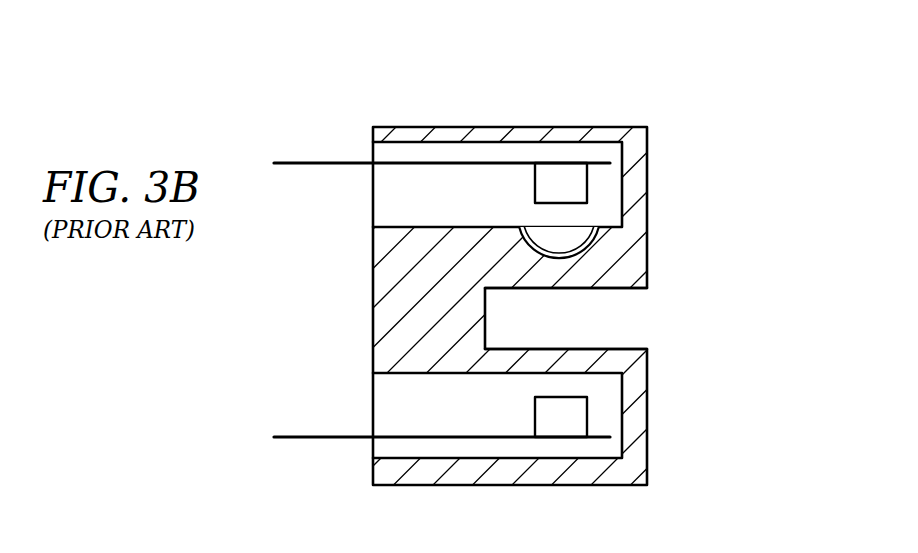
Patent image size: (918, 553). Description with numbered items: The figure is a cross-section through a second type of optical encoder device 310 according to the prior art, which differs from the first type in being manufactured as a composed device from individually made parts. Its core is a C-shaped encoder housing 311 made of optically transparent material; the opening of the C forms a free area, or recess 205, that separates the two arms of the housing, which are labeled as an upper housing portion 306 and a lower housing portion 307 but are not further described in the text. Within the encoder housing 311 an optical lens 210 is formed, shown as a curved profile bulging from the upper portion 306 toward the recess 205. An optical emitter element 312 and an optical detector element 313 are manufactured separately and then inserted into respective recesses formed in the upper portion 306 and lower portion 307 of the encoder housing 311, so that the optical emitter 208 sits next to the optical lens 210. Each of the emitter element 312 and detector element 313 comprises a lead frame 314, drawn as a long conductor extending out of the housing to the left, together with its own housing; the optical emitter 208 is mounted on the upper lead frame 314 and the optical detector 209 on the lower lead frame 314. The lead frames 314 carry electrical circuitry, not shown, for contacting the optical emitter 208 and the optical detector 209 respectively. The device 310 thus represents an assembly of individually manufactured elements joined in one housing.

The second type of optical encoder device 310 is at (657, 80).
The upper core half 306 is at (660, 176).
The lower core half 307 is at (660, 425).
The encoder housing 311 is at (413, 307).
The free area (recess) 205 is at (643, 329).
The optical emitter element 312 is at (400, 227).
The optical detector element 313 is at (400, 373).
The lead frame 314 is at (323, 162).
The optical emitter 208 is at (535, 185).
The optical detector 209 is at (535, 415).
The optical lens 210 is at (540, 259).